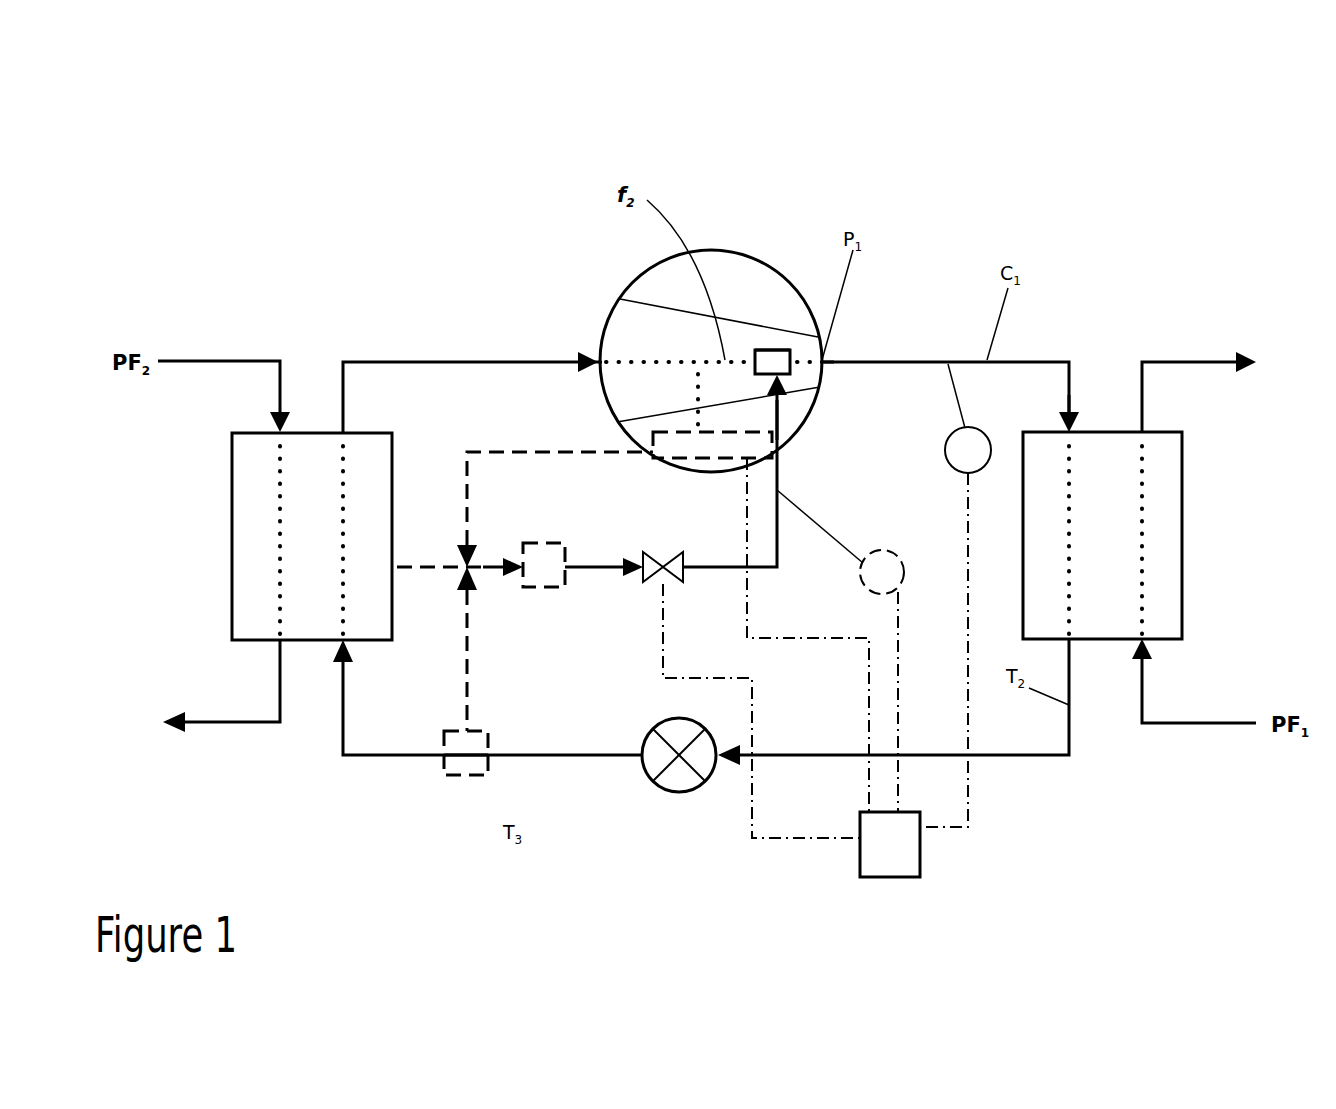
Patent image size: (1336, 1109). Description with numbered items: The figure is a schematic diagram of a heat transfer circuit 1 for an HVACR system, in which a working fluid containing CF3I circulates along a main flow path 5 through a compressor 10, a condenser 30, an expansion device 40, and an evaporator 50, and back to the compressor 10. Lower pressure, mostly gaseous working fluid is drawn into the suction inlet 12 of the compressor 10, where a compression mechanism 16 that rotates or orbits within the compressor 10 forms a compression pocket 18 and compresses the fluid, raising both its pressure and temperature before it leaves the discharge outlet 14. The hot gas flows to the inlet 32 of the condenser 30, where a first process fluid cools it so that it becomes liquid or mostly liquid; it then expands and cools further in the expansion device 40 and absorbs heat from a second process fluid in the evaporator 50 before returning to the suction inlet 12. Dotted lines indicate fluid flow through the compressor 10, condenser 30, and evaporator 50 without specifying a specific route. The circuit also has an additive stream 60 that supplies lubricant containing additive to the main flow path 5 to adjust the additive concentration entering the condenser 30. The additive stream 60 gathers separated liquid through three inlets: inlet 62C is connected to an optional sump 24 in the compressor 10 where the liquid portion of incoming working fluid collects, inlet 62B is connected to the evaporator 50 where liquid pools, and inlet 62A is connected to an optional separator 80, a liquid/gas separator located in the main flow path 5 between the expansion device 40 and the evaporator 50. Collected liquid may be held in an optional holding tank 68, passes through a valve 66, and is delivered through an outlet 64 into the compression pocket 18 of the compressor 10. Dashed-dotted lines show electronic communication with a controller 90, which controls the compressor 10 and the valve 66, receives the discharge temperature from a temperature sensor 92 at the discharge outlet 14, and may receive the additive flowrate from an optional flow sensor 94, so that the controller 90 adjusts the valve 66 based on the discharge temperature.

The heat transfer circuit 1 is at (178, 168).
The main flow path 5 is at (383, 362).
The compressor 10 is at (605, 323).
The suction inlet 12 is at (597, 360).
The discharge outlet 14 is at (822, 360).
The compression mechanism 16 is at (765, 350).
The compression pocket 18 is at (773, 362).
The sump 24 is at (692, 458).
The condenser 30 is at (1182, 538).
The inlet 32 is at (1073, 428).
The expansion device 40 is at (653, 781).
The evaporator 50 is at (232, 553).
The additive stream 60 is at (777, 567).
The inlet 62A is at (467, 707).
The inlet 62B is at (418, 565).
The inlet 62C is at (572, 450).
The outlet 64 is at (777, 418).
The valve 66 is at (682, 582).
The holding tank 68 is at (565, 587).
The separator 80 is at (443, 777).
The controller 90 is at (860, 877).
The temperature sensor 92 is at (947, 447).
The flow sensor 94 is at (897, 553).